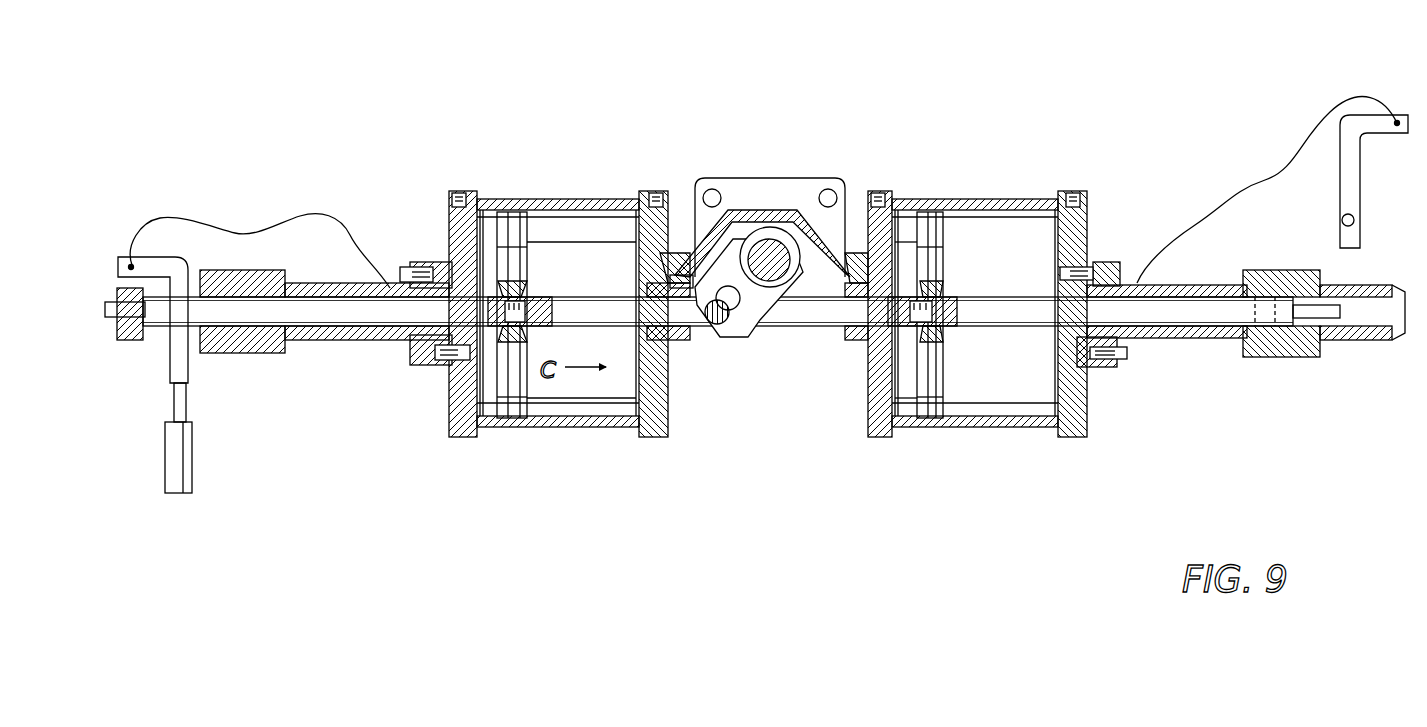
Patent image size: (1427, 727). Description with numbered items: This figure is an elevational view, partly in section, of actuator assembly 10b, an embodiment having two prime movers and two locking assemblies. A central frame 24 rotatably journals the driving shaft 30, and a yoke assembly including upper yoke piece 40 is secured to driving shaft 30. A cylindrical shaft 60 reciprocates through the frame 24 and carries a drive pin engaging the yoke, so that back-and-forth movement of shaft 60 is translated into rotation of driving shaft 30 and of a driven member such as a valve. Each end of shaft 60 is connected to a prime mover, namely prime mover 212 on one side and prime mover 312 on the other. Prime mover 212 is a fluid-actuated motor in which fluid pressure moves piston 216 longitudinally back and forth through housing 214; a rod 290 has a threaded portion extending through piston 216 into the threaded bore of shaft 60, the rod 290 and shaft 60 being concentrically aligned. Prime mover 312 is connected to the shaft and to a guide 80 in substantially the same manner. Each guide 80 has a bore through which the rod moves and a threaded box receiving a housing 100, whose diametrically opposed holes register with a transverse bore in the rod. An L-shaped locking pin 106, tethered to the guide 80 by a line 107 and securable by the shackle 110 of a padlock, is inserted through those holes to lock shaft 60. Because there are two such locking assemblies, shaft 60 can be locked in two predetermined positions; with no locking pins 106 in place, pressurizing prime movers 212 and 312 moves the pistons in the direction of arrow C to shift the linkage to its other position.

The actuator assembly 10b is at (832, 76).
The frame 24 is at (728, 172).
The driving shaft 30 is at (771, 256).
The upper yoke piece 40 is at (761, 276).
The shaft 60 is at (692, 320).
The guide 80 is at (340, 341).
The housing 100 is at (1373, 349).
The locking pin 106 is at (189, 360).
The line 107 is at (280, 222).
The shackle 110 is at (185, 468).
The prime mover 212 is at (1002, 305).
The housing 214 is at (1018, 428).
The piston 216 is at (925, 414).
The rod 290 is at (1083, 277).
The prime mover 312 is at (550, 190).